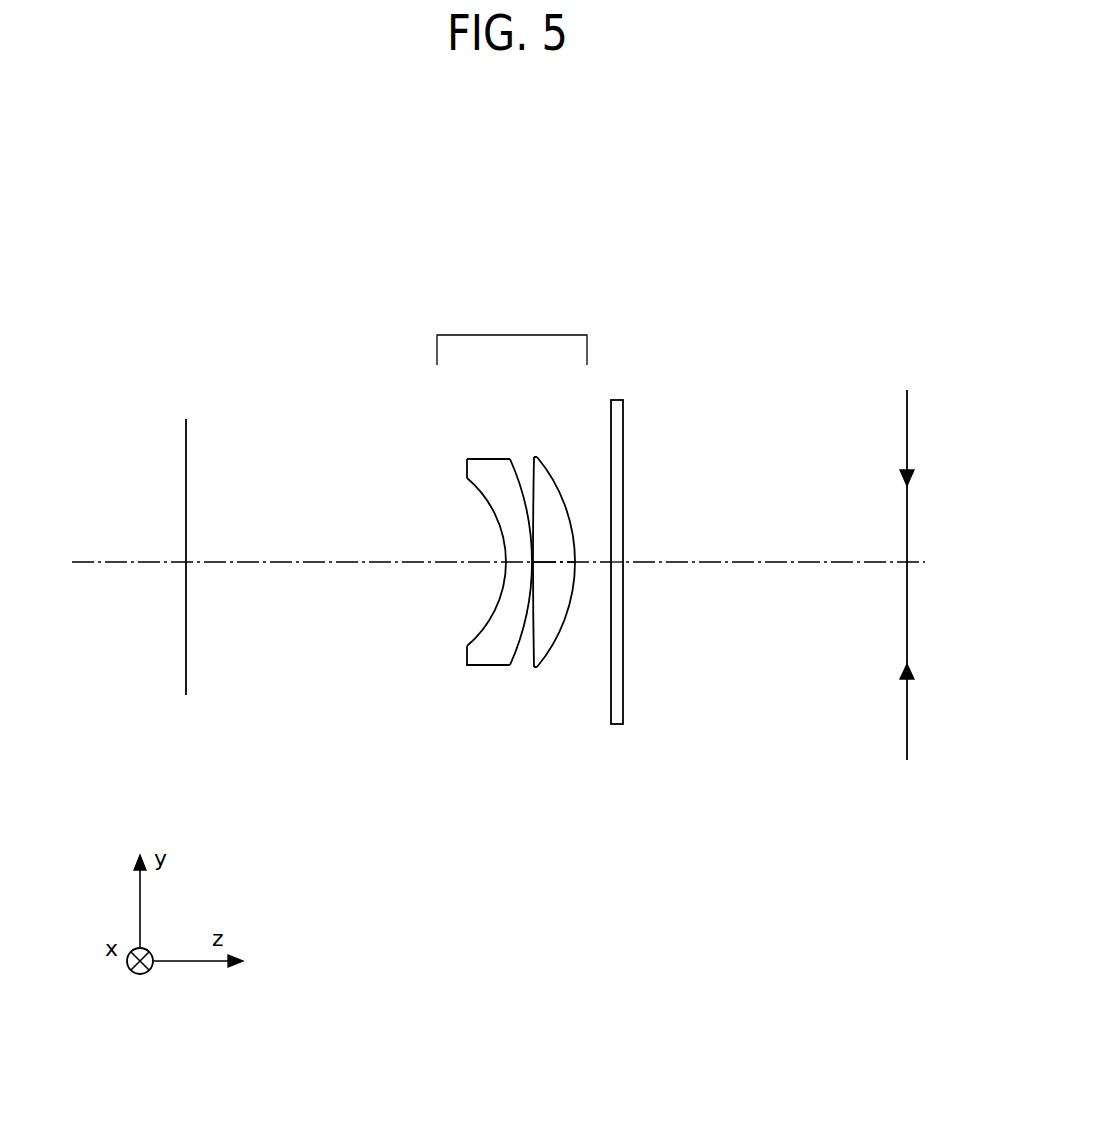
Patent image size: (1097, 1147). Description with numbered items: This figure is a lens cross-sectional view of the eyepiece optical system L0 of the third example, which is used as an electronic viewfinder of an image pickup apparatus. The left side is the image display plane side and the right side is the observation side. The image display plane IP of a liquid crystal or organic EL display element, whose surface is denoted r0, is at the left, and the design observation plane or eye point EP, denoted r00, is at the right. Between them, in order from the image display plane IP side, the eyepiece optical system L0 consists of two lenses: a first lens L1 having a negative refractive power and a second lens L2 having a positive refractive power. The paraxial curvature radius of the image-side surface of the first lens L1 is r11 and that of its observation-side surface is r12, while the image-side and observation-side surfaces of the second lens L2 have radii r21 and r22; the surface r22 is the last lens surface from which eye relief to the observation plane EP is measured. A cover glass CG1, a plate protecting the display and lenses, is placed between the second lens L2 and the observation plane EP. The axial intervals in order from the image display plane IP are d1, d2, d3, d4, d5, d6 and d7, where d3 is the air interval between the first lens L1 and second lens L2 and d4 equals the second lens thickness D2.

The image display plane IP is at (188, 563).
The display panel surface r0 is at (186, 695).
The axial surface interval d1 is at (346, 579).
The eyepiece optical system L0 is at (492, 546).
The first lens L1 is at (461, 554).
The second lens L2 is at (543, 581).
The paraxial curvature radius of image-side surface of first lens r11 is at (468, 641).
The paraxial curvature radius of observation-side surface of first lens r12 is at (512, 657).
The paraxial curvature radius of image-side surface of second lens r21 is at (532, 665).
The paraxial curvature radius of observation-side surface of second lens r22 is at (552, 650).
The axial surface interval d2 is at (515, 577).
The axial interval between first and second lens d3 is at (535, 592).
The axial surface interval d4 is at (536, 565).
The thickness of second lens D2 is at (551, 588).
The axial surface interval d5 is at (605, 565).
The axial surface interval d6 is at (628, 578).
The axial surface interval d7 is at (765, 577).
The cover glass CG1 is at (618, 415).
The observation plane EP is at (901, 580).
The observation plane surface r00 is at (907, 700).